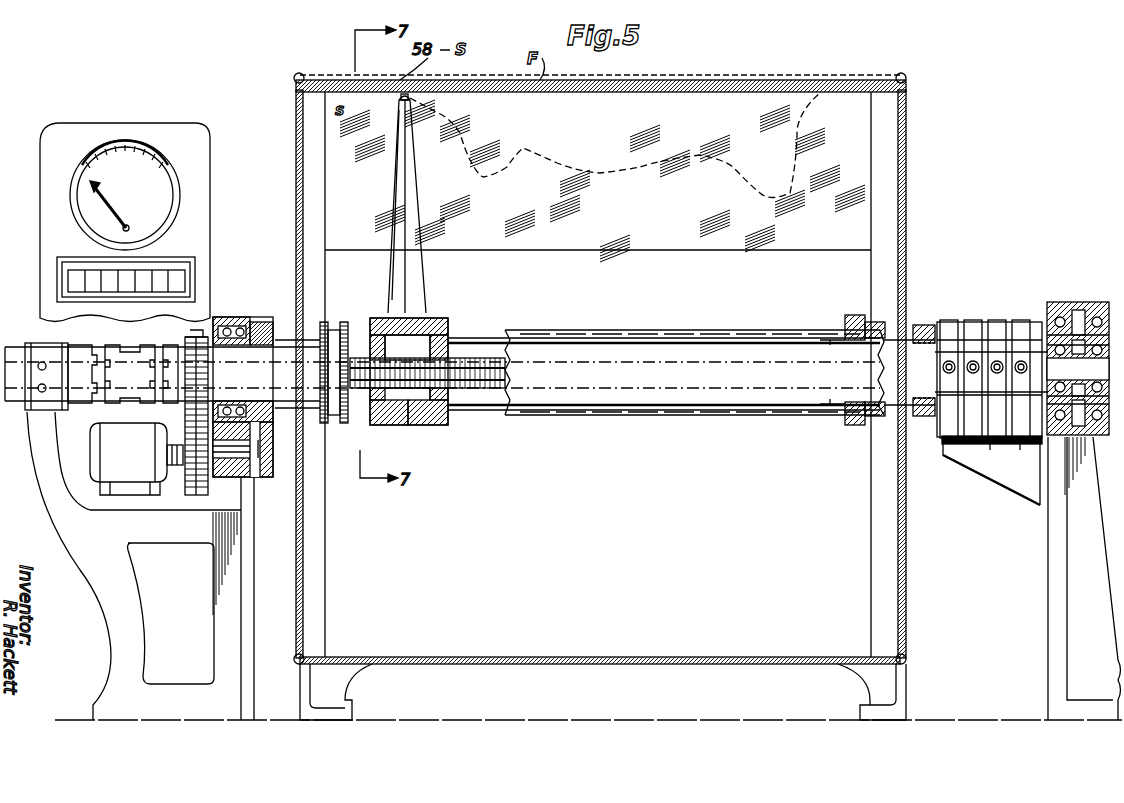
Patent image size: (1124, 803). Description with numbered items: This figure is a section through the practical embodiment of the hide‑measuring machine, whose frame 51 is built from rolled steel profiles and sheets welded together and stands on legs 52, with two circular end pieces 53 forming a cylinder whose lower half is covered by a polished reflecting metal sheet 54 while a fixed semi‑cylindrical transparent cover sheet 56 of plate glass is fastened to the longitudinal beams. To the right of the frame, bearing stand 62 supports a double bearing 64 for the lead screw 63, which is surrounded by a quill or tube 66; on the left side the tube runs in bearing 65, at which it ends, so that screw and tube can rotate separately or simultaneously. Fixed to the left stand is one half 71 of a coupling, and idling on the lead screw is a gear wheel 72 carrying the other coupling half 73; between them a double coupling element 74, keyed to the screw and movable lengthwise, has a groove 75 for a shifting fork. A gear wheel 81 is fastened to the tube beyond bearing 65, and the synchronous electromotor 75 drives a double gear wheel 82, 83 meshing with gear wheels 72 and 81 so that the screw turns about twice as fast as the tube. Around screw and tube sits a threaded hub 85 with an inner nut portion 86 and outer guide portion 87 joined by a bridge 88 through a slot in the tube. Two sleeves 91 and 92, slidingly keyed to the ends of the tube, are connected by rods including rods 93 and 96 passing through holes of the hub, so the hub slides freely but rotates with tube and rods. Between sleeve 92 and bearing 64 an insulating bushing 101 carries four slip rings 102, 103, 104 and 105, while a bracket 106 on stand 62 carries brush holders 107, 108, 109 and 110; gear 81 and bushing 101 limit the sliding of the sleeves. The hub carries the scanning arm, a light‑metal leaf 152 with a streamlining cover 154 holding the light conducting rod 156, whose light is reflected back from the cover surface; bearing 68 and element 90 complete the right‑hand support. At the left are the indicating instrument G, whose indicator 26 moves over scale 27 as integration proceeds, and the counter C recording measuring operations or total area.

The frame 51 is at (600, 368).
The legs 52 is at (345, 700).
The circular end pieces 53 is at (325, 190).
The polished metal sheet 54 is at (618, 657).
The semi-cylindrical cover sheet 56 is at (732, 92).
The bearing stand 62 is at (222, 608).
The lead screw 63 is at (490, 362).
The double bearing 64 is at (1078, 349).
The bearing 65 is at (250, 325).
The quill or tube 66 is at (689, 373).
The ball bearing 68 is at (1058, 302).
The coupling half 71 is at (80, 348).
The gear wheel 72 is at (196, 337).
The coupling half 73 is at (170, 348).
The double coupling element 74 is at (137, 340).
The groove 75 is at (140, 403).
The gear wheel 81 is at (275, 345).
The double gear wheel 82 is at (198, 495).
The double gear wheel 83 is at (262, 478).
The threaded hub 85 is at (431, 368).
The inner nut portion 86 is at (378, 425).
The outer guide portion 87 is at (420, 425).
The bridge 88 is at (442, 355).
The bearing sleeve 90 is at (838, 332).
The sleeve 91 is at (332, 322).
The sleeve 92 is at (852, 315).
The rod 93 is at (618, 330).
The rod 96 is at (660, 418).
The bushing 101 is at (920, 325).
The slip ring 102 is at (995, 361).
The slip ring 103 is at (978, 322).
The slip ring 104 is at (1000, 322).
The slip ring 105 is at (1025, 322).
The bracket 106 is at (1018, 488).
The brush holder 107 is at (952, 435).
The brush holder 108 is at (965, 445).
The brush holder 109 is at (1000, 445).
The brush holder 110 is at (1027, 445).
The leaf 152 is at (409, 203).
The cover 154 is at (393, 249).
The light conducting rod 156 is at (401, 100).
The indicator 26 is at (118, 195).
The scale 27 is at (86, 190).
The indicating instrument G is at (125, 222).
The counter C is at (196, 282).